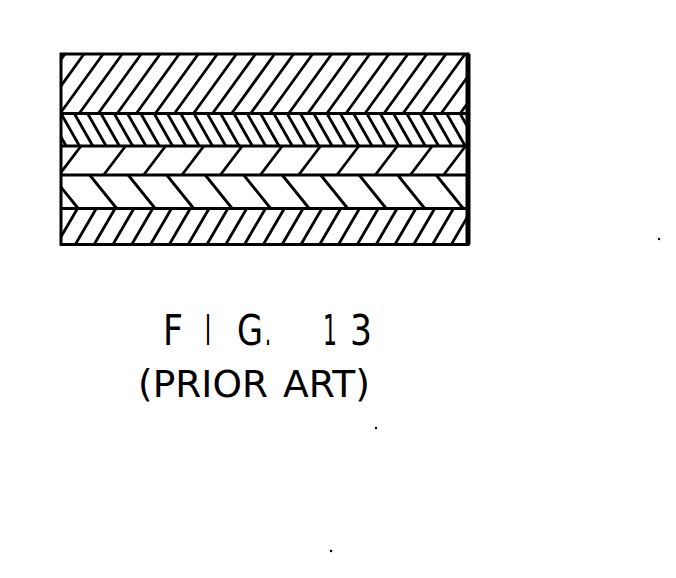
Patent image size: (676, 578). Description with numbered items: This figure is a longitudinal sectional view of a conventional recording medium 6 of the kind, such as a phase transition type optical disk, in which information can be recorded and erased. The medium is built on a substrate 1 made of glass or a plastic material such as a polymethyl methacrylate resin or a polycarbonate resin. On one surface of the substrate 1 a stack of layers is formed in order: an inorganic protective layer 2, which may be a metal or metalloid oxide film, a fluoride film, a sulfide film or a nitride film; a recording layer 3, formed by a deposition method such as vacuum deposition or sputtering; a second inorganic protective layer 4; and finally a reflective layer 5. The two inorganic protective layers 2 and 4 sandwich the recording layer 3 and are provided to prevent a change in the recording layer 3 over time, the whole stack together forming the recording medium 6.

The recording medium 6 is at (285, 36).
The substrate 1 is at (468, 82).
The inorganic protective layer 2 is at (468, 123).
The recording layer 3 is at (468, 159).
The inorganic protective layer 4 is at (468, 190).
The reflective layer 5 is at (468, 226).